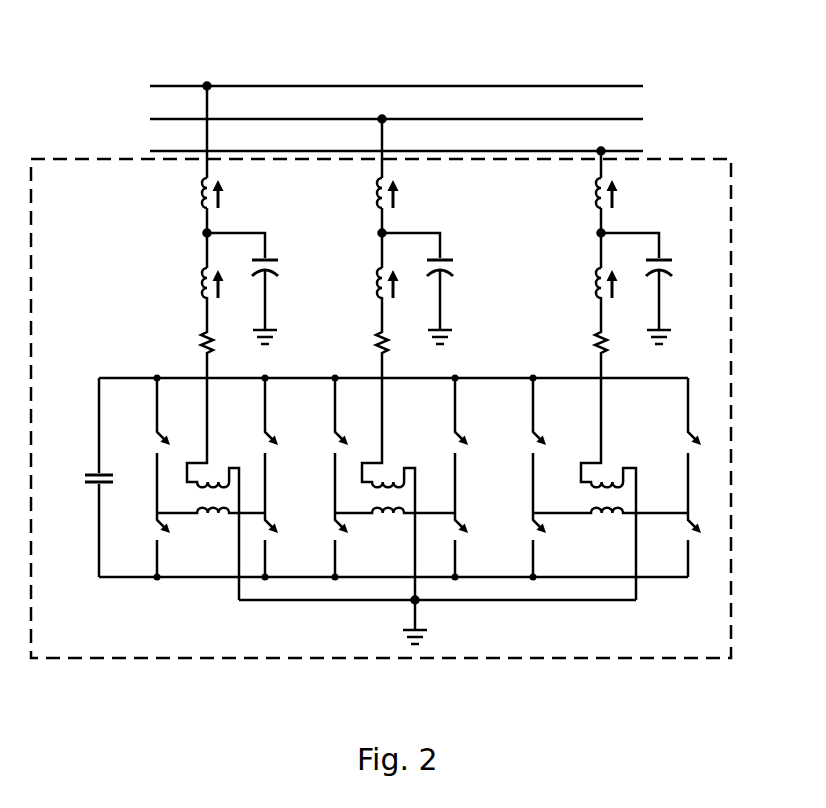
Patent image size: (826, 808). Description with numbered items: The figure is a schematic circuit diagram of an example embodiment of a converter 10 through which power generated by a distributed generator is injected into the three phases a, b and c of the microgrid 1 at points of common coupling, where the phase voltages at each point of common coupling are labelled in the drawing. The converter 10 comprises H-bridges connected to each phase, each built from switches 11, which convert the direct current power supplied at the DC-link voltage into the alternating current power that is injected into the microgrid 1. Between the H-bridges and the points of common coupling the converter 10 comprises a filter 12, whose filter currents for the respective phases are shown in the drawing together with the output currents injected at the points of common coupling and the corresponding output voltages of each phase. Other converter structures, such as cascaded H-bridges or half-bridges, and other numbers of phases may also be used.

The microgrid 1 is at (704, 63).
The converter 10 is at (702, 201).
The switches 11 is at (699, 440).
The filter 12 is at (142, 301).